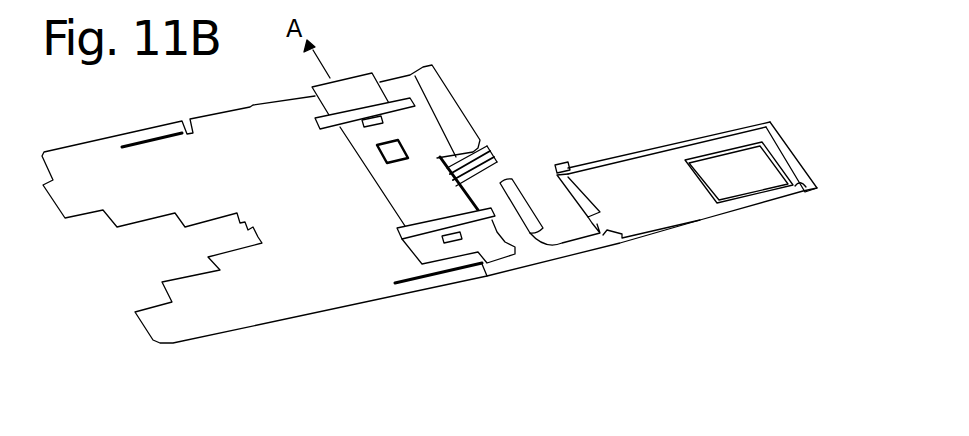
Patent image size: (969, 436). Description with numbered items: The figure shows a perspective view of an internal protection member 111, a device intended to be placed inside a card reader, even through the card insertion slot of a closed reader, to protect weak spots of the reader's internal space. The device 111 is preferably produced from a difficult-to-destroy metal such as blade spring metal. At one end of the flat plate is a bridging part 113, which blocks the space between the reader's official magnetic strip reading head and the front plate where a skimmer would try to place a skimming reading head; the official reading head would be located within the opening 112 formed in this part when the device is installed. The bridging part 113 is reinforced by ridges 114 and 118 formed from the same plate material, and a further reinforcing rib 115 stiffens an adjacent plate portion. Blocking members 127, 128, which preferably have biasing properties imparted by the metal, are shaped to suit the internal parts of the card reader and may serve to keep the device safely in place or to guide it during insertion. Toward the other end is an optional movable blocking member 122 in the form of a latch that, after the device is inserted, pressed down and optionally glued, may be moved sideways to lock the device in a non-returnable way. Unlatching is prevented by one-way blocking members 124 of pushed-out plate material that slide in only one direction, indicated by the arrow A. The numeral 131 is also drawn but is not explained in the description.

The internal protection member 111 is at (570, 100).
The opening 112 is at (741, 192).
The bridging part 113 is at (778, 110).
The ridge 114 is at (796, 183).
The reinforcing rib 115 is at (683, 141).
The ridge 118 is at (800, 189).
The movable blocking member 122 is at (410, 183).
The one-way blocking member 124 is at (382, 148).
The blocking member 127 is at (487, 152).
The blocking member 128 is at (563, 163).
The flap 131 is at (372, 60).